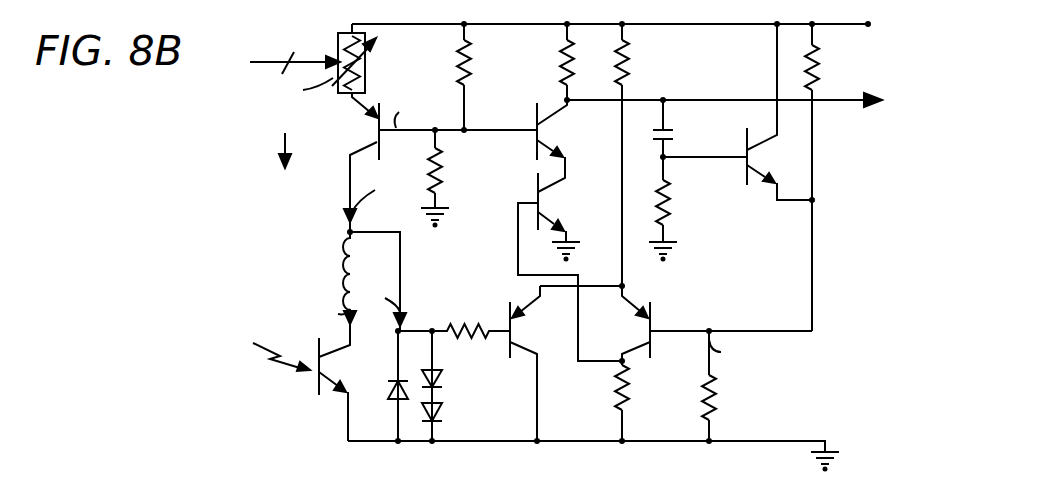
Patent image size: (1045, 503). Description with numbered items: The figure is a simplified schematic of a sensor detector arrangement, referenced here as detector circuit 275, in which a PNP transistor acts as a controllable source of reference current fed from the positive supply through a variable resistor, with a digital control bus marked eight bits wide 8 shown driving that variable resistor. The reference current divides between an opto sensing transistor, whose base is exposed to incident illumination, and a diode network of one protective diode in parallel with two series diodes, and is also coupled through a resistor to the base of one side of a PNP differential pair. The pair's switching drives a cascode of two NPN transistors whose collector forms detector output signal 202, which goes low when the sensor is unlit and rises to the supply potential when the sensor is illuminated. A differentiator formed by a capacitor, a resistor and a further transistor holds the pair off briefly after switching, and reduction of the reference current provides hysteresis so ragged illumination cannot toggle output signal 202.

The motor drive and current sensing circuit 275 is at (268, 236).
The detector output signal 202 is at (724, 124).
The 8-bit data bus D 8 is at (295, 56).